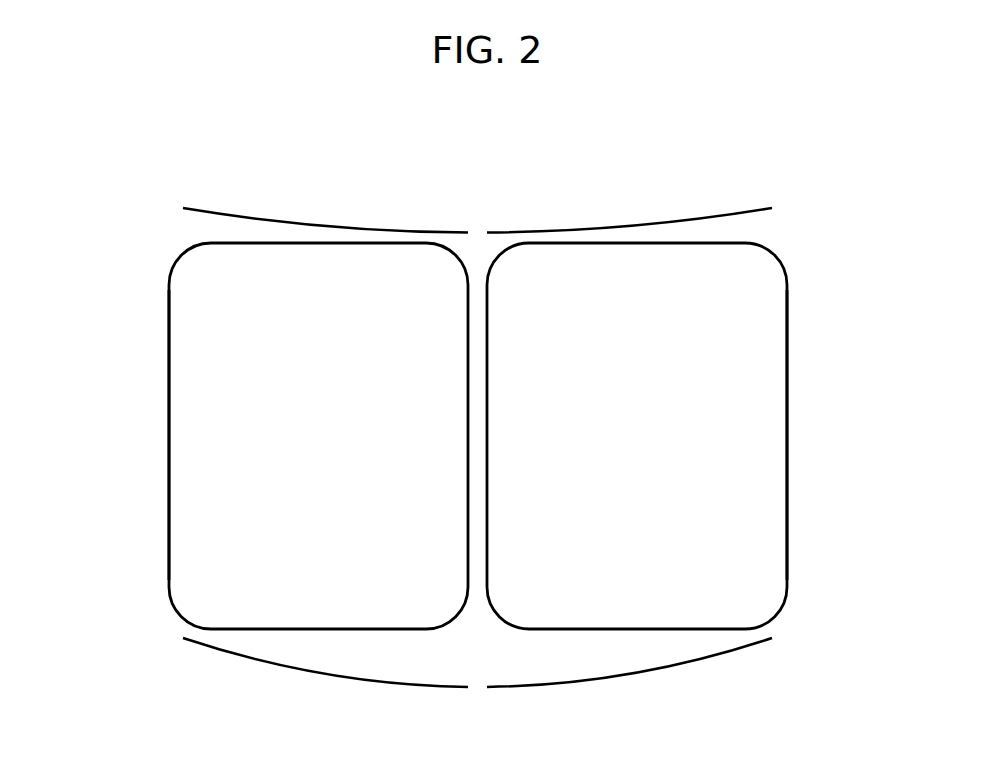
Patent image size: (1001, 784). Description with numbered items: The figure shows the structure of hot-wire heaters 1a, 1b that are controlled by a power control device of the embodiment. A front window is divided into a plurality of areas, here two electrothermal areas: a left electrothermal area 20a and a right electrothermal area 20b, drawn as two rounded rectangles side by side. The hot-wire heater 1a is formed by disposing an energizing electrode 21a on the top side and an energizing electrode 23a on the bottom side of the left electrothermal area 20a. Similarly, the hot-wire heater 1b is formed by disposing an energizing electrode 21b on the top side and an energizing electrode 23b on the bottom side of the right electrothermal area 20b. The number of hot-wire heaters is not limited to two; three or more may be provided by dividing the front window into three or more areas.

The hot-wire heater 1a is at (141, 287).
The hot-wire heater 1b is at (817, 288).
The left electrothermal area 20a is at (169, 437).
The right electrothermal area 20b is at (787, 435).
The energizing electrode 21a is at (345, 228).
The energizing electrode 21b is at (650, 228).
The energizing electrode 23a is at (346, 680).
The energizing electrode 23b is at (585, 680).